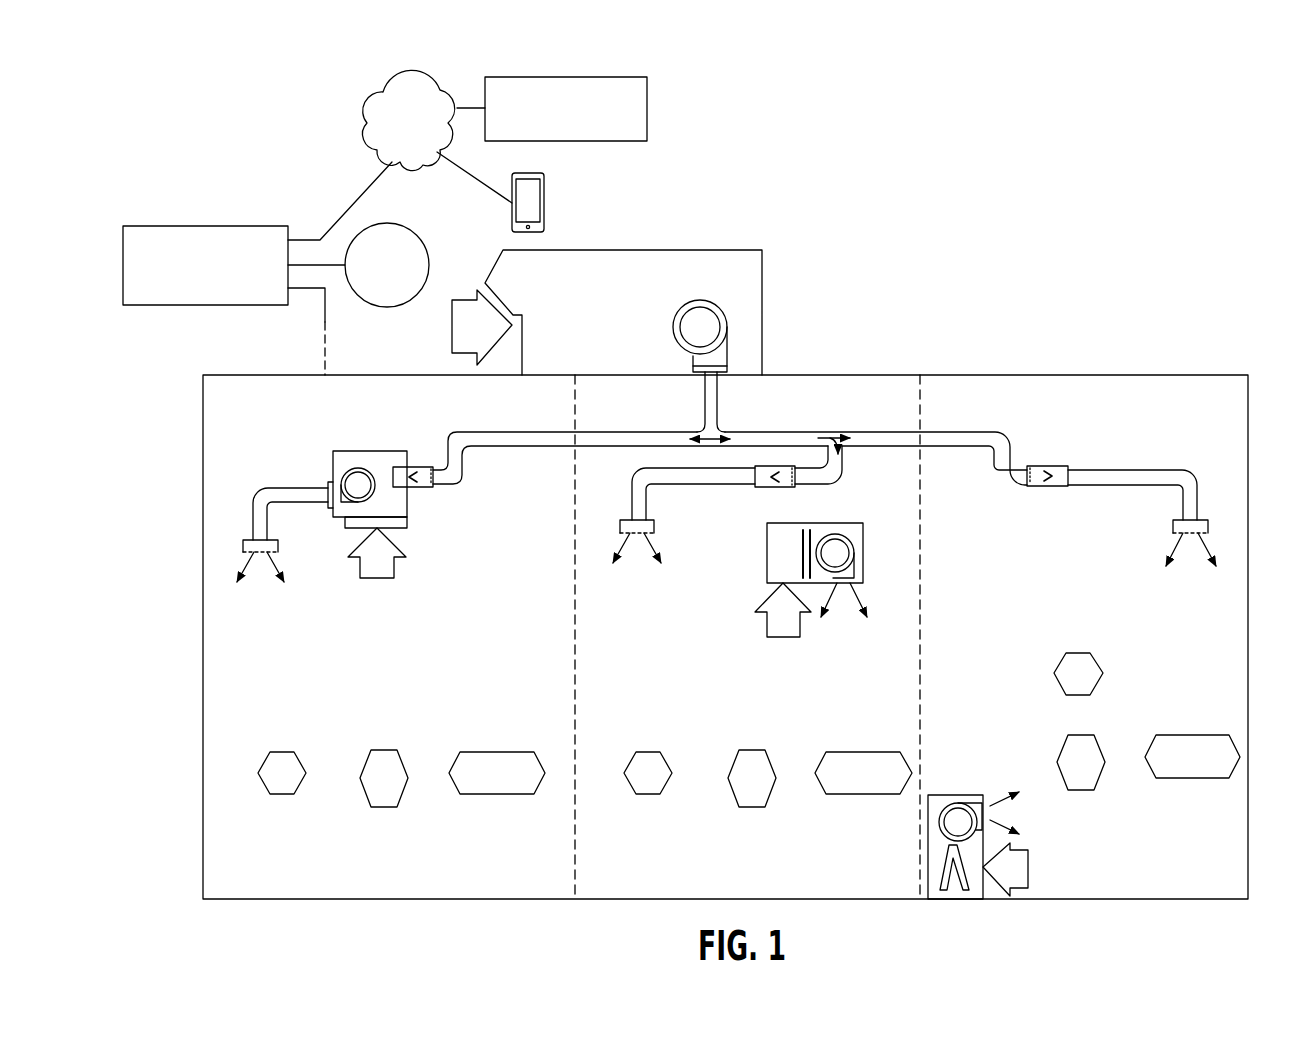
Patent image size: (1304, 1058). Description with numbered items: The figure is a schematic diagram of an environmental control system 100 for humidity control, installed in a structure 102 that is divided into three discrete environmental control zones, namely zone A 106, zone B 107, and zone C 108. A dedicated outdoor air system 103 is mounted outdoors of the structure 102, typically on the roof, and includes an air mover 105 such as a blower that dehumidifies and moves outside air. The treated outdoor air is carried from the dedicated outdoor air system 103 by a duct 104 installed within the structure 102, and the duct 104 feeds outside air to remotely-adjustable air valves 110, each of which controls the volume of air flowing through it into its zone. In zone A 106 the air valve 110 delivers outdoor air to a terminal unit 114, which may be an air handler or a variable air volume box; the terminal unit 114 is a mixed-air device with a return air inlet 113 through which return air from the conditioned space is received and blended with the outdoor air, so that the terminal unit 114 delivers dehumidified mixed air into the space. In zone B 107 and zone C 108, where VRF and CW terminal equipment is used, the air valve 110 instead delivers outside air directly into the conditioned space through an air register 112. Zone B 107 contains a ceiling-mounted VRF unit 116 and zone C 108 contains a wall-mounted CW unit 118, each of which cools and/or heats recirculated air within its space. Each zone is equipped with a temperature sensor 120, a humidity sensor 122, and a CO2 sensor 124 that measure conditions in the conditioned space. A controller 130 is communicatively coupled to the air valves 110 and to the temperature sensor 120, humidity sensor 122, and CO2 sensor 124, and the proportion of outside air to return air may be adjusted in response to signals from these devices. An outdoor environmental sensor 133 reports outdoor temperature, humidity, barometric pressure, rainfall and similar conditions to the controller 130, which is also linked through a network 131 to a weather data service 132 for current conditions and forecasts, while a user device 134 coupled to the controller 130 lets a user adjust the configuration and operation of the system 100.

The environmental control system 100 is at (1042, 208).
The structure 102 is at (1205, 375).
The dedicated outdoor air system 103 is at (737, 250).
The duct 104 is at (753, 432).
The air mover 105 is at (729, 336).
The zone A 106 is at (260, 900).
The zone B 107 is at (657, 900).
The zone C 108 is at (1057, 900).
The air valve 110 is at (417, 487).
The air register 112 is at (243, 545).
The return air inlet 113 is at (403, 530).
The terminal unit 114 is at (361, 451).
The VRF unit 116 is at (830, 523).
The CW unit 118 is at (955, 795).
The temperature sensor 120 is at (280, 752).
The humidity sensor 122 is at (382, 750).
The CO2 sensor 124 is at (495, 752).
The controller 130 is at (167, 226).
The network 131 is at (388, 83).
The weather data service 132 is at (625, 77).
The outdoor environmental sensor 133 is at (385, 223).
The user device 134 is at (544, 200).